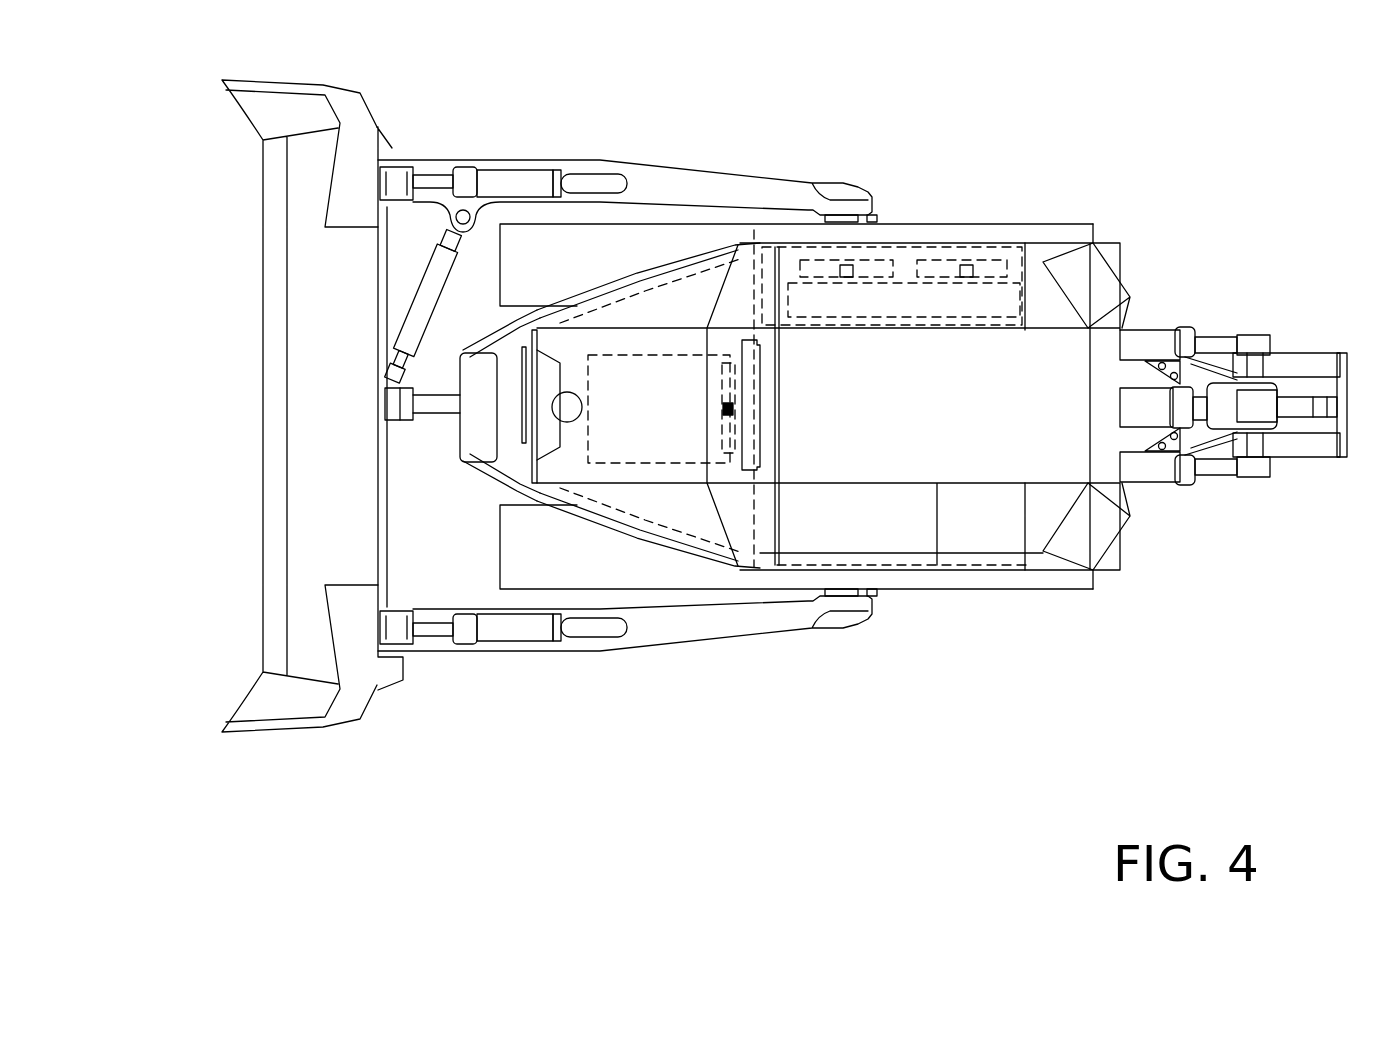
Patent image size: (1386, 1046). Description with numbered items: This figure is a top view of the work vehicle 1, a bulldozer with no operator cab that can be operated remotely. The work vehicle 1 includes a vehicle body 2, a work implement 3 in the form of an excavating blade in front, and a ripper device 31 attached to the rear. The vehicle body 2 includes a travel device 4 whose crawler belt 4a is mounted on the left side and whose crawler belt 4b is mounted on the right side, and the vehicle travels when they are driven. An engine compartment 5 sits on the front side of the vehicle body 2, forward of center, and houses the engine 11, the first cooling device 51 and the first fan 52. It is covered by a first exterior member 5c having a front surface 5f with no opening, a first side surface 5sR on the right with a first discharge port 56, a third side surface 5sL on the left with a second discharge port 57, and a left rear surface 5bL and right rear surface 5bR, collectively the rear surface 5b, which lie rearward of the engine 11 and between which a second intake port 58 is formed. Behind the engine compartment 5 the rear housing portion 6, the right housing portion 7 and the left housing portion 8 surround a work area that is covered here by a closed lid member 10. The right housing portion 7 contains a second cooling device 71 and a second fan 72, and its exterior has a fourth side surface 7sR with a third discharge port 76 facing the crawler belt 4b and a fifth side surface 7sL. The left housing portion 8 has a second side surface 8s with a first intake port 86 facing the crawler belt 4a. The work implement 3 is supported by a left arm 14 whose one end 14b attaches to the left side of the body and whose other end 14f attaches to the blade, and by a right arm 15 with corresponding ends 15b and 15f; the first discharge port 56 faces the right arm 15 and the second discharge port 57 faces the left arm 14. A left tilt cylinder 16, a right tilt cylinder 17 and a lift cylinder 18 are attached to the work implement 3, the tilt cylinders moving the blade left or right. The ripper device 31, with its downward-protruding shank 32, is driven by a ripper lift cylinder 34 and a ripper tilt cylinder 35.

The work vehicle 1 is at (1160, 213).
The vehicle body 2 is at (1060, 590).
The work implement 3 is at (263, 210).
The travel device 4 is at (771, 409).
The crawler belt 4a is at (567, 563).
The crawler belt 4b is at (523, 267).
The engine compartment 5 is at (505, 422).
The rear surface 5b is at (775, 513).
The left rear surface 5bL is at (732, 455).
The right rear surface 5bR is at (832, 520).
The first exterior member 5c is at (590, 485).
The front surface 5f is at (730, 427).
The third side surface 5sL is at (630, 525).
The first side surface 5sR is at (645, 300).
The rear housing portion 6 is at (1100, 530).
The right housing portion 7 is at (1074, 212).
The fifth side surface 7sL is at (1070, 313).
The fourth side surface 7sR is at (980, 240).
The left housing portion 8 is at (922, 535).
The second side surface 8s is at (1007, 573).
The lid member 10 is at (1120, 475).
The engine 11 is at (690, 355).
The left arm 14 is at (667, 687).
The one end of the left arm 14b is at (847, 607).
The another end of the left arm 14f is at (397, 657).
The right arm 15 is at (641, 133).
The one end of the right arm 15b is at (847, 203).
The another end of the right arm 15f is at (397, 172).
The left tilt cylinder 16 is at (513, 630).
The right tilt cylinder 17 is at (500, 180).
The lift cylinder 18 is at (555, 403).
The ripper device 31 is at (1249, 330).
The shank 32 is at (1320, 353).
The ripper lift cylinder 34 is at (1243, 322).
The ripper tilt cylinder 35 is at (1330, 550).
The first cooling device 51 is at (705, 567).
The first fan 52 is at (610, 507).
The first discharge port 56 is at (636, 278).
The second discharge port 57 is at (672, 548).
The second intake port 58 is at (712, 312).
The second cooling device 71 is at (1033, 313).
The second fan 72 is at (877, 237).
The third discharge port 76 is at (946, 242).
The first intake port 86 is at (965, 573).